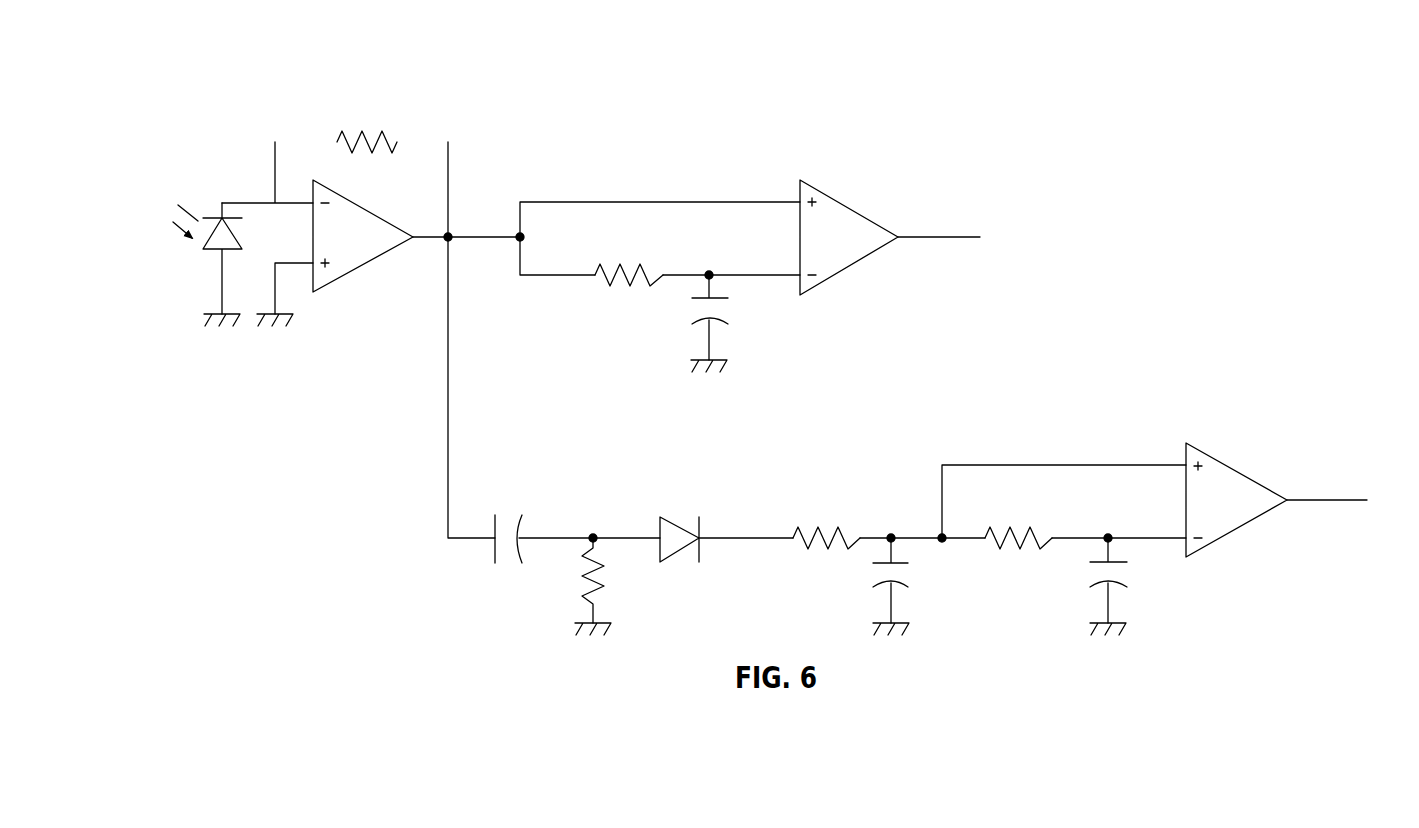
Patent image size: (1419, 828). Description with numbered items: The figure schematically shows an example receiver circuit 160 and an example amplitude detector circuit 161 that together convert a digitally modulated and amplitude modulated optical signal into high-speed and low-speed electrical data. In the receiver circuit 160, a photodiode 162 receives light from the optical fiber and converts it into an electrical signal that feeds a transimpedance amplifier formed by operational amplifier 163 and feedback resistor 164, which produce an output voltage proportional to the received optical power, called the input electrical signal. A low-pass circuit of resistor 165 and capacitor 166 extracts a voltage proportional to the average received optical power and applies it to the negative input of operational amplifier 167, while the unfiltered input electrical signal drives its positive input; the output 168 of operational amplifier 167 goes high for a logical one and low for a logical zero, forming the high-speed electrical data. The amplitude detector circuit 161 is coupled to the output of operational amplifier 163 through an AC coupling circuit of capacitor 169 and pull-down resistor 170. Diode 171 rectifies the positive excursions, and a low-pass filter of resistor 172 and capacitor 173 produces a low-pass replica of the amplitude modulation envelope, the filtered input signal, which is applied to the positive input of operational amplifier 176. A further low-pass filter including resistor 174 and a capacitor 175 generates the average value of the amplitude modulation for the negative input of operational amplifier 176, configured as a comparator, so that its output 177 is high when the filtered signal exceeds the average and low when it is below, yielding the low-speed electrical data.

The receiver circuit 160 is at (296, 108).
The amplitude detector circuit 161 is at (976, 415).
The photodiode 162 is at (188, 192).
The operational amplifier 163 is at (363, 273).
The feedback resistor 164 is at (393, 138).
The resistor 165 is at (610, 280).
The capacitor 166 is at (728, 322).
The operational amplifier 167 is at (838, 200).
The output 168 is at (928, 236).
The capacitor 169 is at (518, 517).
The pull-down resistor 170 is at (578, 582).
The diode 171 is at (666, 517).
The resistor 172 is at (826, 533).
The capacitor 173 is at (908, 586).
The resistor 174 is at (996, 548).
The capacitor 175 is at (1090, 587).
The operational amplifier 176 is at (1218, 458).
The output 177 is at (1323, 500).